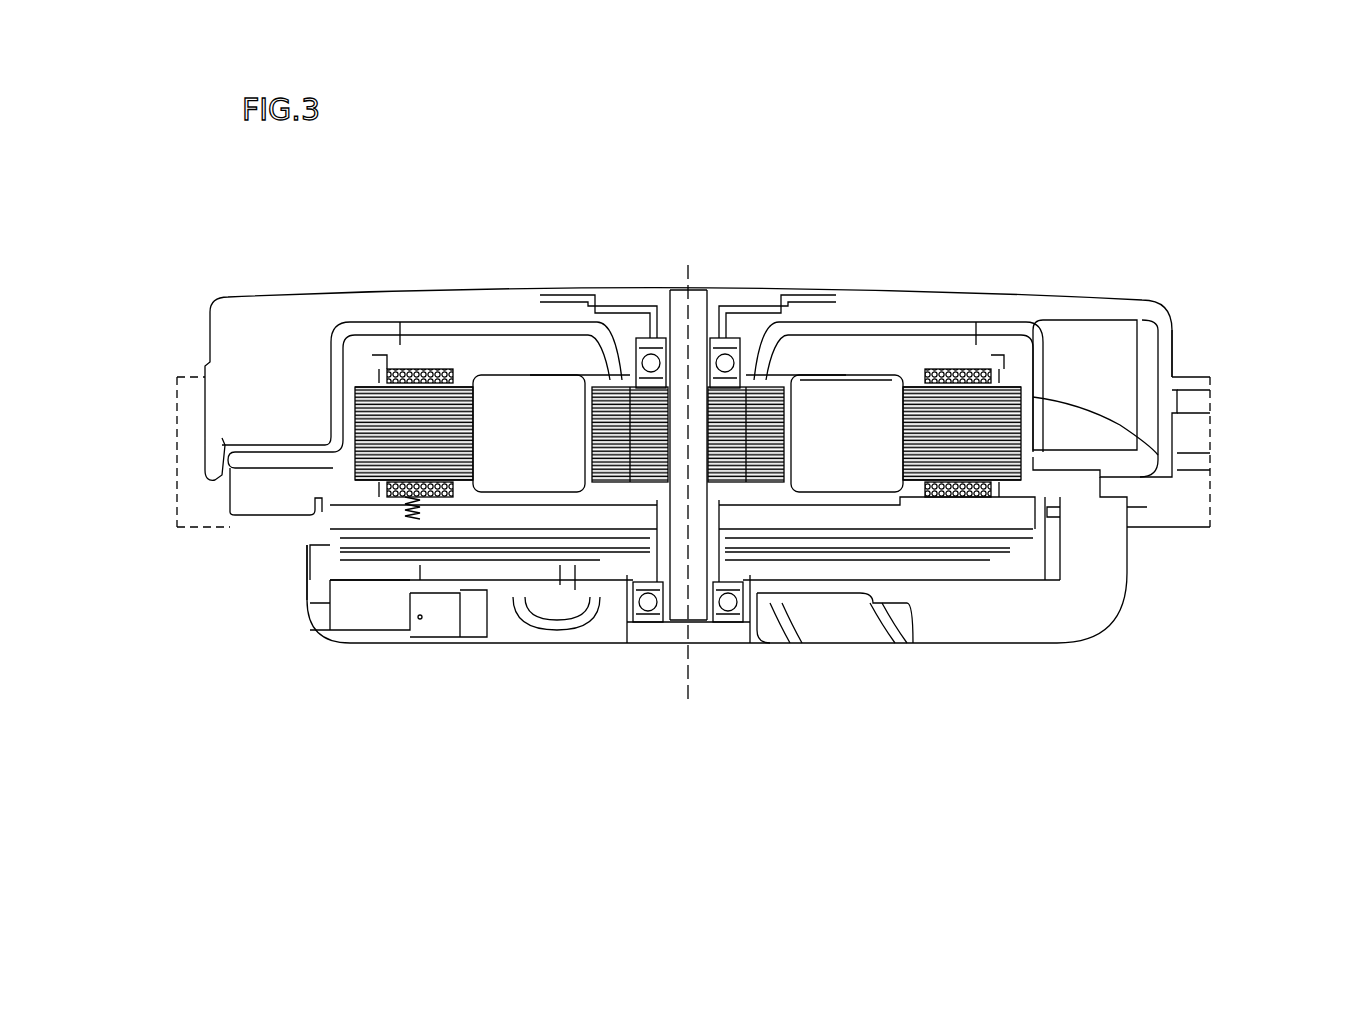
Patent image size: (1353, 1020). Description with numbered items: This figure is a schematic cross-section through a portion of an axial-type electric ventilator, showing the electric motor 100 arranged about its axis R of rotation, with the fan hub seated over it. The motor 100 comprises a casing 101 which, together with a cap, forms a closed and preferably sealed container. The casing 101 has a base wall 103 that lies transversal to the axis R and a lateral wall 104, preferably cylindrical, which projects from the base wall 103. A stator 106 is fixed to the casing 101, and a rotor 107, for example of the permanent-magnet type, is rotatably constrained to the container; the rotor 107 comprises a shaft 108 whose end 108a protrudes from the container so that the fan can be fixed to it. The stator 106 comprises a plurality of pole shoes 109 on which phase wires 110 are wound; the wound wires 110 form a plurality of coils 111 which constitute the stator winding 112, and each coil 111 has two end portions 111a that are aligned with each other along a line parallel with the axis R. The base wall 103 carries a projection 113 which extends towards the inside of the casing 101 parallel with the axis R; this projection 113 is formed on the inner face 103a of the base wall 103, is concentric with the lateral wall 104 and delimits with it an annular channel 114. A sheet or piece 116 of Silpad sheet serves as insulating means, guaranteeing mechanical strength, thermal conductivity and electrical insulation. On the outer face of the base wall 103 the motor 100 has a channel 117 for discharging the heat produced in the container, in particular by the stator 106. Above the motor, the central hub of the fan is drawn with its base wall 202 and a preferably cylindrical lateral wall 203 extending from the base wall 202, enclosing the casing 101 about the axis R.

The electric motor 100 is at (807, 653).
The casing 101 is at (1060, 400).
The base wall 103 is at (768, 330).
The inner face 103a is at (813, 378).
The lateral wall 104 is at (1045, 414).
The stator 106 is at (437, 512).
The rotor 107 is at (627, 557).
The shaft 108 is at (698, 607).
The end 108a is at (667, 292).
The pole shoes 109 is at (355, 450).
The phase wires 110 is at (937, 500).
The coils 111 is at (390, 485).
The end portions 111a is at (410, 377).
The stator winding 112 is at (407, 500).
The projection 113 is at (355, 422).
The annular channel 114 is at (332, 368).
The piece of sheet 116 is at (445, 370).
The channel 117 is at (425, 340).
The base wall 202 is at (565, 340).
The lateral wall 203 is at (1176, 362).
The axis of rotation R is at (700, 267).